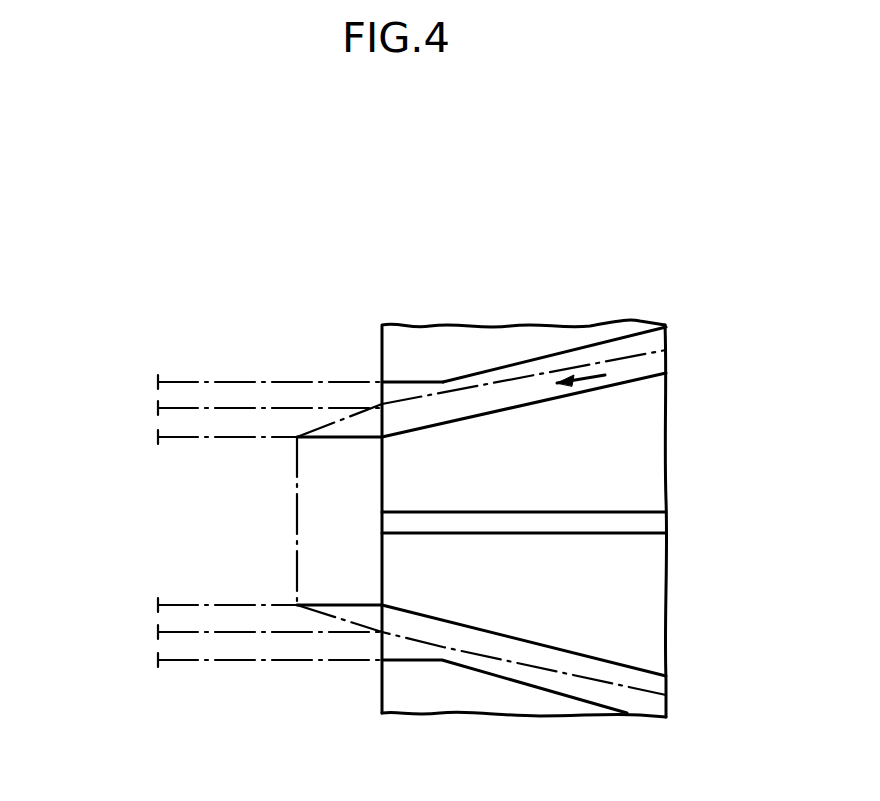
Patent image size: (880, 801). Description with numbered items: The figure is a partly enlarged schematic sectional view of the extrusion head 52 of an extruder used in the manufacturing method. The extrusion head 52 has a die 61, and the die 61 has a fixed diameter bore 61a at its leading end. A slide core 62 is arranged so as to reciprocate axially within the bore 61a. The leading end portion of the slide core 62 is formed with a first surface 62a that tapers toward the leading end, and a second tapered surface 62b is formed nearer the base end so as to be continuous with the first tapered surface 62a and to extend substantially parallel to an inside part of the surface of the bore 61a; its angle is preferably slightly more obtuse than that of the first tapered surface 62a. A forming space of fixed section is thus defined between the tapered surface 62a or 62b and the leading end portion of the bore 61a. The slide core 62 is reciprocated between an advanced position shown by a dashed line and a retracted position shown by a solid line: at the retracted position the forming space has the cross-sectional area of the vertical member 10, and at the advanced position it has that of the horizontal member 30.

The vertical member 10 is at (213, 605).
The horizontal member 30 is at (167, 617).
The extrusion head 52 is at (610, 282).
The die 61 is at (487, 337).
The fixed diameter bore 61a is at (394, 383).
The slide core 62 is at (635, 458).
The first tapered surface 62a is at (313, 607).
The second tapered surface 62b is at (547, 633).